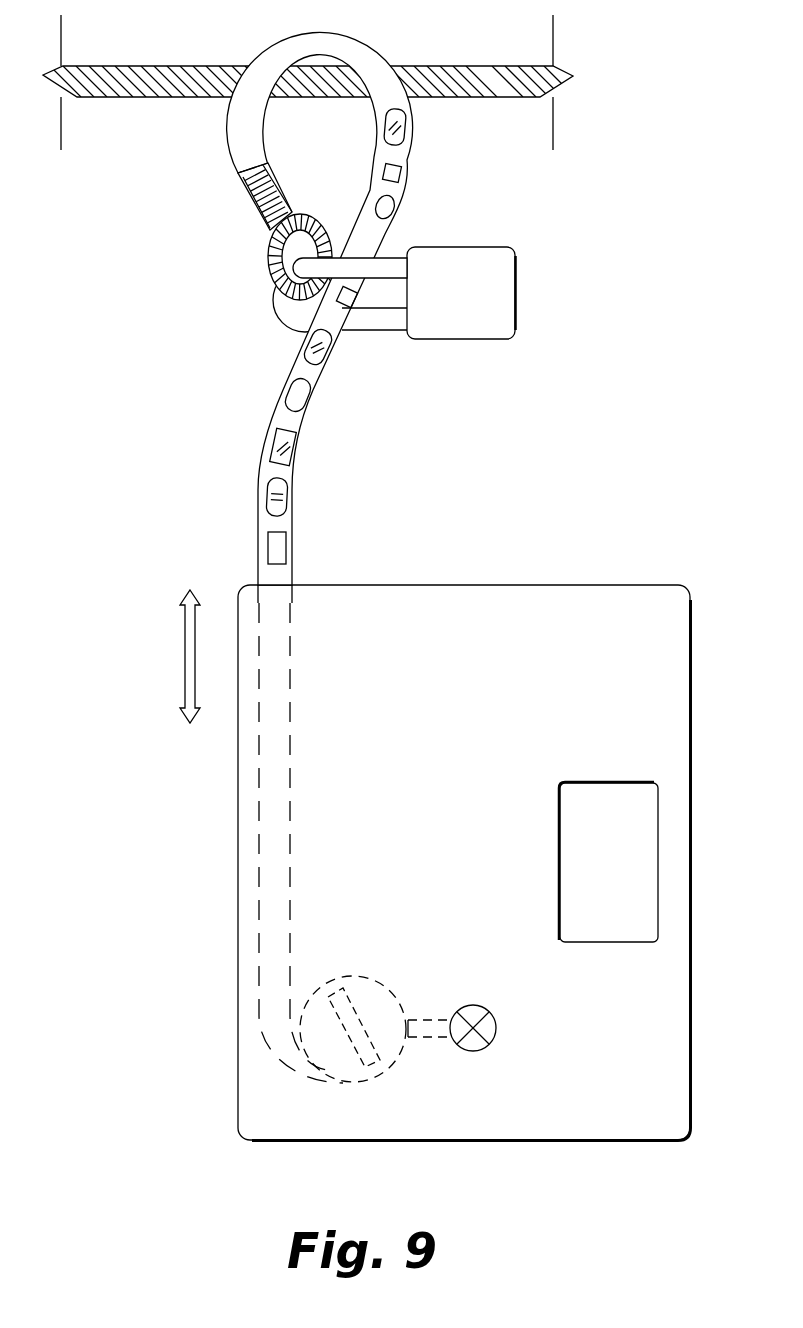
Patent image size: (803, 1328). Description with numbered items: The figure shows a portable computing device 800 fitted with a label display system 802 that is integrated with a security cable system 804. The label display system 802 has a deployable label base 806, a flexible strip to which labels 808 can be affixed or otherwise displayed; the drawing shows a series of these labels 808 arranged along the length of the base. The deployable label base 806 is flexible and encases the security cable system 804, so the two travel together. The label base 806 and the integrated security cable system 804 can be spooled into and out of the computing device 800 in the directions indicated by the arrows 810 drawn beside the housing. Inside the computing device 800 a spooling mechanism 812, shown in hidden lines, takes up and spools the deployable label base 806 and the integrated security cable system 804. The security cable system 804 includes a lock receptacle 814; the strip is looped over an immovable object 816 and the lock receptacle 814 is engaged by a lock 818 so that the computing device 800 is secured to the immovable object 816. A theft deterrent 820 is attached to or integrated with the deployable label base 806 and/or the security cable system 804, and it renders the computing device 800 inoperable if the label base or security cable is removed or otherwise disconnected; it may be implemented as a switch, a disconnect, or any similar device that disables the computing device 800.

The computing device 800 is at (589, 558).
The label display system 802 is at (255, 481).
The security cable system 804 is at (247, 200).
The deployable label base 806 is at (292, 520).
The labels 808 is at (268, 462).
The arrows 810 is at (185, 660).
The spooling mechanism 812 is at (356, 975).
The lock receptacle 814 is at (270, 260).
The immovable object 816 is at (105, 66).
The lock 818 is at (462, 247).
The theft deterrent 820 is at (473, 1052).